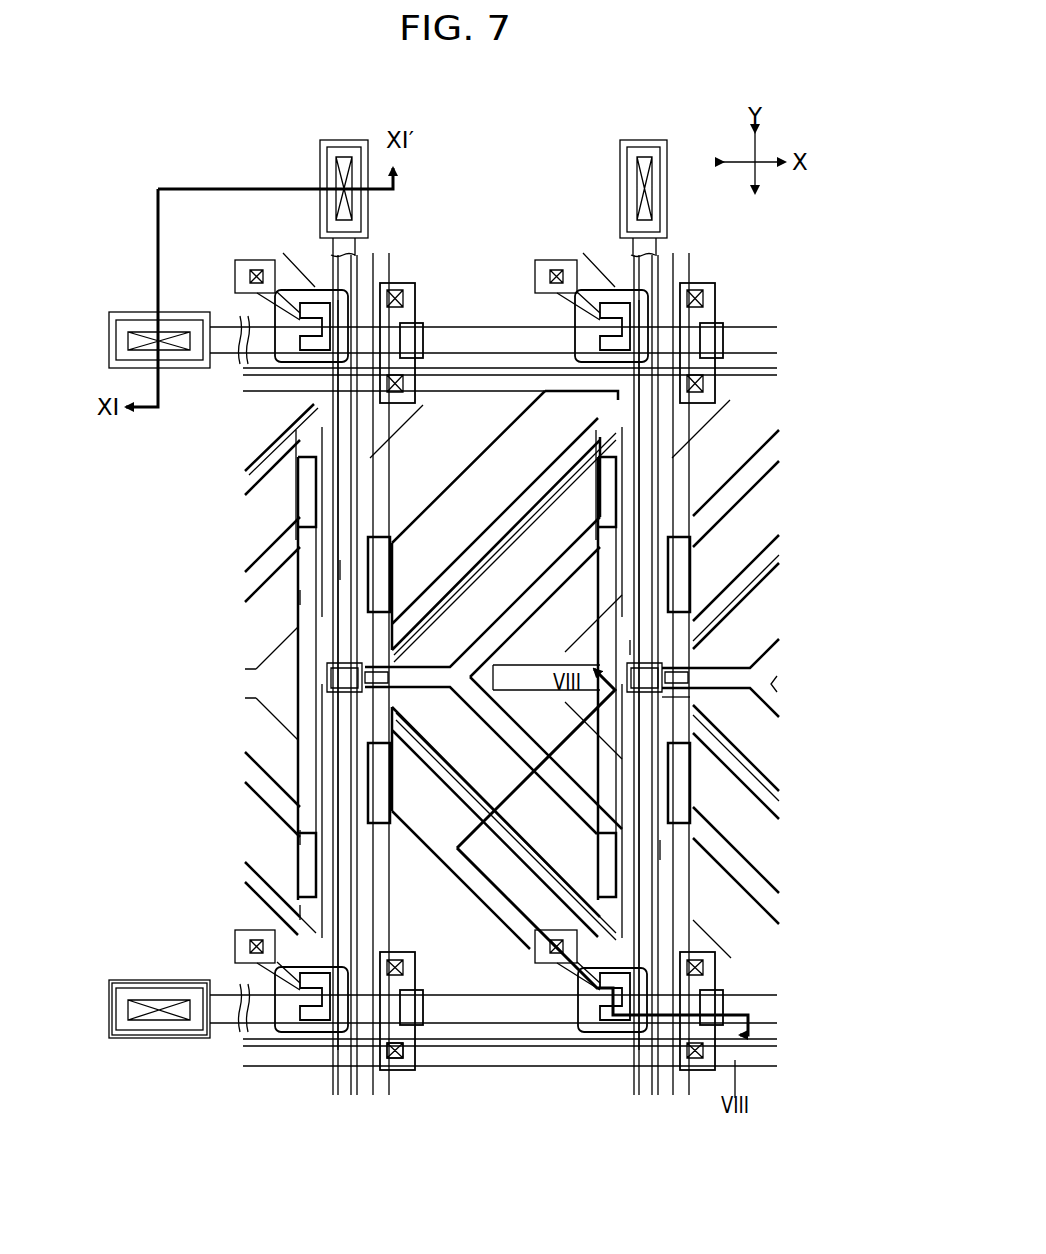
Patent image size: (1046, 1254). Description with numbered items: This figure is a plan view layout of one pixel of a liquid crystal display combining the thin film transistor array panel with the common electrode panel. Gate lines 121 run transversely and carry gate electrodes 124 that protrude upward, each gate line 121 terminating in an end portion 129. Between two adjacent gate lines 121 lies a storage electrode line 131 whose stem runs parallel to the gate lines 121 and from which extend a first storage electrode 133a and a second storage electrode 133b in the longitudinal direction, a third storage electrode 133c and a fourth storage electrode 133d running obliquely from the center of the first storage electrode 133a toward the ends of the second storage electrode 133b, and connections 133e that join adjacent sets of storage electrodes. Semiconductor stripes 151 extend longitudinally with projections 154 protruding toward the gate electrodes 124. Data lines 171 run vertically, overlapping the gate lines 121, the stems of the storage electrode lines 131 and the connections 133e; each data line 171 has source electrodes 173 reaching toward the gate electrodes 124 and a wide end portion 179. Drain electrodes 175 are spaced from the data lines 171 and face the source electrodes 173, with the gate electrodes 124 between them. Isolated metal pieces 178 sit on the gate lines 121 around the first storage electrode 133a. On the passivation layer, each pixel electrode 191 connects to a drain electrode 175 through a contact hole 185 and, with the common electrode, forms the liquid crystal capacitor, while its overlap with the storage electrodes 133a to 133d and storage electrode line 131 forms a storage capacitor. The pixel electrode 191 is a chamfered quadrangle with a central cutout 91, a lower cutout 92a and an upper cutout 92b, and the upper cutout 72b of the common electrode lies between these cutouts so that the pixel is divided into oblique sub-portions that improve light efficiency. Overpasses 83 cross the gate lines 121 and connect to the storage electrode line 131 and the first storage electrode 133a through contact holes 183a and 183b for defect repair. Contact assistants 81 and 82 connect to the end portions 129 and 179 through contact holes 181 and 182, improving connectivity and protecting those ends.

The upper cutout of the common electrode 72b is at (445, 462).
The contact assistant 81 is at (110, 1010).
The contact assistant 82 is at (320, 214).
The overpass 83 is at (405, 290).
The central cutout 91 is at (630, 647).
The lower cutout 92a is at (660, 852).
The upper cutout 92b is at (340, 570).
The gate line 121 is at (540, 330).
The gate electrode 124 is at (590, 1035).
The end portion of the gate line 129 is at (162, 1035).
The storage electrode line 131 is at (470, 400).
The first storage electrode 133a is at (325, 497).
The second storage electrode 133b is at (640, 597).
The third storage electrode 133c is at (520, 512).
The fourth storage electrode 133d is at (480, 792).
The connection 133e is at (645, 697).
The semiconductor stripe 151 is at (655, 512).
The projection 154 is at (568, 1035).
The data line 171 is at (370, 746).
The source electrode 173 is at (622, 1035).
The drain electrode 175 is at (510, 1000).
The isolated metal piece 178 is at (366, 1012).
The end portion of the data line 179 is at (345, 138).
The contact hole 181 is at (160, 995).
The contact hole 182 is at (340, 175).
The contact hole 183a is at (393, 1065).
The contact hole 183b is at (300, 597).
The contact hole 185 is at (545, 945).
The pixel electrode 191 is at (478, 1000).